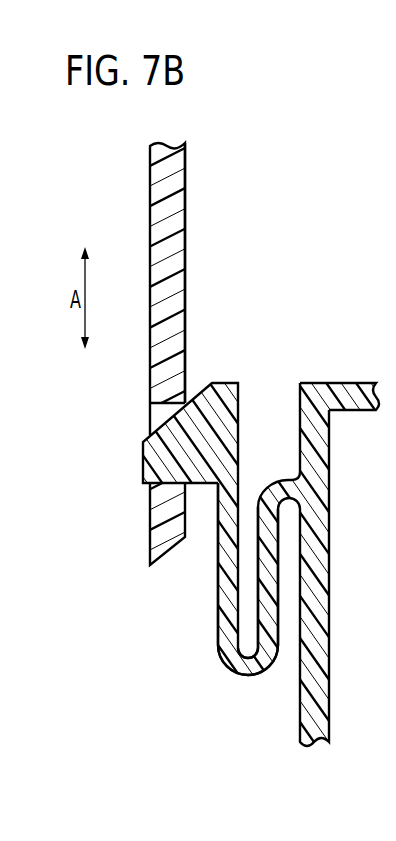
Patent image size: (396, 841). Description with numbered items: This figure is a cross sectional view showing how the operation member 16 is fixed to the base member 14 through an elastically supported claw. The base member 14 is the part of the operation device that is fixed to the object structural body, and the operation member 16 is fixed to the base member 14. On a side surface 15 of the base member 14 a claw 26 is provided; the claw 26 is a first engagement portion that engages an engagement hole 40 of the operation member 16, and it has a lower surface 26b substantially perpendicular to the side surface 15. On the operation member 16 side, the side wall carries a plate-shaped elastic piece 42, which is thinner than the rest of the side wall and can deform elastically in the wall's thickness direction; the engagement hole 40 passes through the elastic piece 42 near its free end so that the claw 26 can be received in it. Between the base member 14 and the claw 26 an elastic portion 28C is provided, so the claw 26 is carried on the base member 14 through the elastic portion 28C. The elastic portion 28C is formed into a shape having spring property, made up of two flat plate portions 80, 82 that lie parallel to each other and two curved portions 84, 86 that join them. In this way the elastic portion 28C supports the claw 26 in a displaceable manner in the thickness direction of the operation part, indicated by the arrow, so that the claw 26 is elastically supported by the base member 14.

The base member 14 is at (337, 383).
The side surface 15 is at (298, 720).
The operation member 16 is at (150, 188).
The claw 26 is at (142, 463).
The lower surface 26b is at (150, 508).
The elastic portion 28C is at (218, 603).
The engagement hole 40 is at (160, 412).
The elastic piece 42 is at (152, 243).
The flat plate portion 80 is at (218, 572).
The flat plate portion 82 is at (275, 561).
The curved portion 84 is at (278, 484).
The curved portion 86 is at (247, 676).